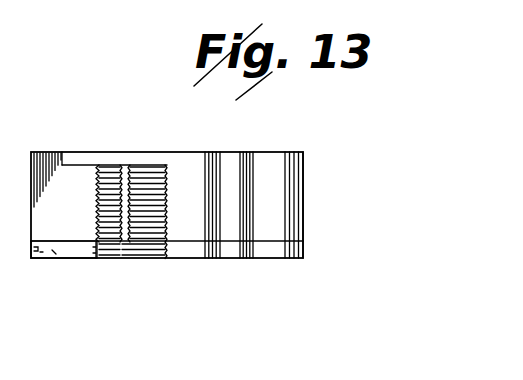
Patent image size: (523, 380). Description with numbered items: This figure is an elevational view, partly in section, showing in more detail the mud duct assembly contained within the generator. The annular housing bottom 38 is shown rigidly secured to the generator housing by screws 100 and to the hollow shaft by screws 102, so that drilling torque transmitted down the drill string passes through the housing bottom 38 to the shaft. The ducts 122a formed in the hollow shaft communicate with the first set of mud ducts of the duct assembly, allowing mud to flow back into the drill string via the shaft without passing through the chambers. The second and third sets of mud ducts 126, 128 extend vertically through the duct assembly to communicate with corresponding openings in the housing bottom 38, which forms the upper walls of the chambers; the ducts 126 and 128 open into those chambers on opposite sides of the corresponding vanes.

The annular housing bottom 38 is at (87, 262).
The screws 100 is at (38, 262).
The screws 102 is at (93, 258).
The ducts 122a is at (127, 240).
The second set of mud ducts 126 is at (250, 163).
The third set of mud ducts 128 is at (219, 152).